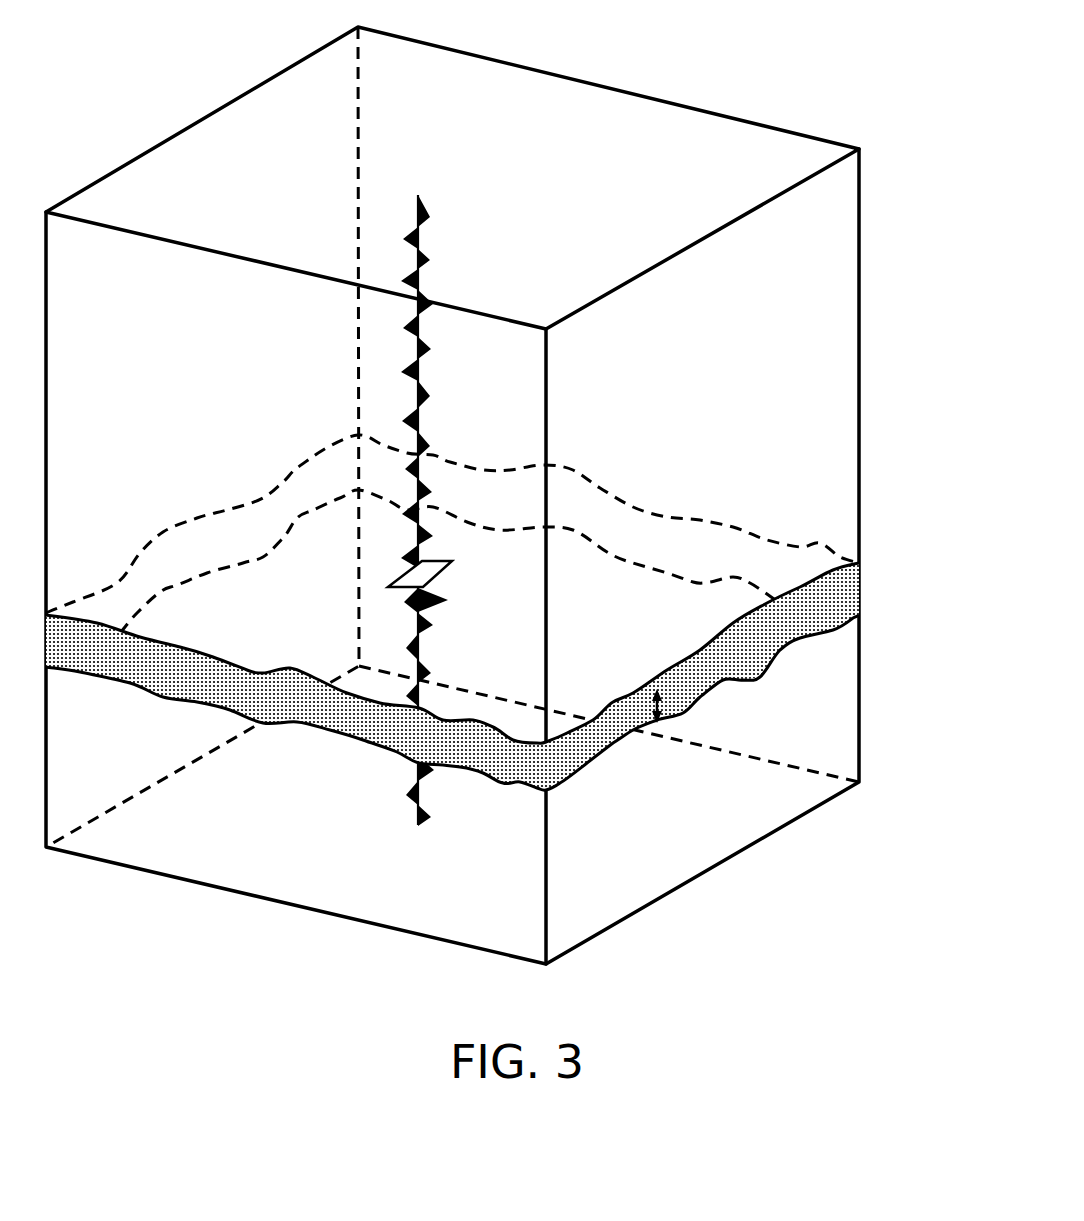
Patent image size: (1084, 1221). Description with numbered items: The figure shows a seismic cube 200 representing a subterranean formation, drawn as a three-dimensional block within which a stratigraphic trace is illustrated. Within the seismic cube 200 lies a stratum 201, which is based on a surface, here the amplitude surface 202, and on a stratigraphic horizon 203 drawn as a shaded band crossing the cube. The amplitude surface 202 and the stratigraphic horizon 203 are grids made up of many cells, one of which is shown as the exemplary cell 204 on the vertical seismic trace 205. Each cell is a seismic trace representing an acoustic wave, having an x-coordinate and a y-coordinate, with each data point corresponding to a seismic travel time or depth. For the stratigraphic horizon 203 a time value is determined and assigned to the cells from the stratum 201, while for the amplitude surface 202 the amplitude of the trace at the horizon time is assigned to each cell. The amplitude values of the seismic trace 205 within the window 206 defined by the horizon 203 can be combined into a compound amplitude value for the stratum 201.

The seismic cube 200 is at (717, 113).
The stratum 201 is at (890, 553).
The amplitude surface 202 is at (214, 623).
The stratigraphic horizon 203 is at (710, 647).
The cell 204 is at (443, 562).
The seismic trace 205 is at (420, 212).
The window 206 is at (655, 725).